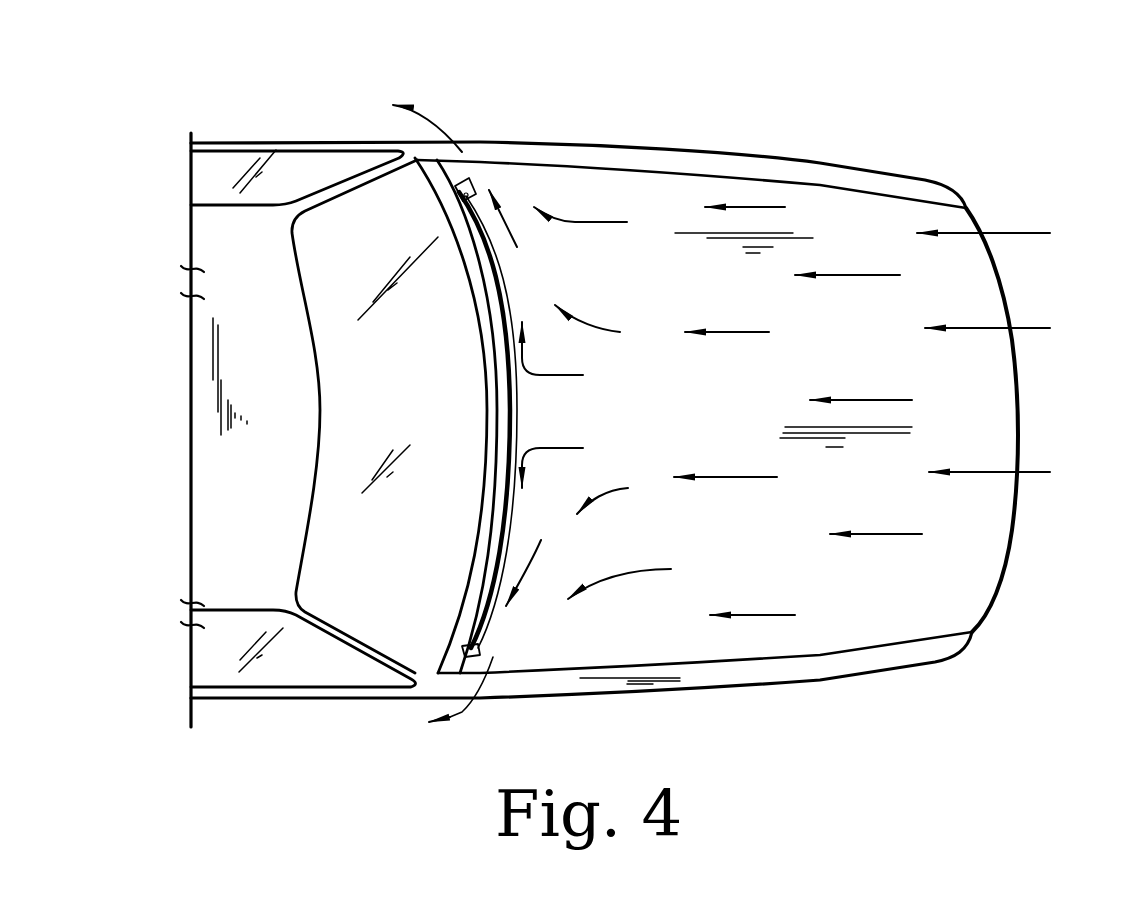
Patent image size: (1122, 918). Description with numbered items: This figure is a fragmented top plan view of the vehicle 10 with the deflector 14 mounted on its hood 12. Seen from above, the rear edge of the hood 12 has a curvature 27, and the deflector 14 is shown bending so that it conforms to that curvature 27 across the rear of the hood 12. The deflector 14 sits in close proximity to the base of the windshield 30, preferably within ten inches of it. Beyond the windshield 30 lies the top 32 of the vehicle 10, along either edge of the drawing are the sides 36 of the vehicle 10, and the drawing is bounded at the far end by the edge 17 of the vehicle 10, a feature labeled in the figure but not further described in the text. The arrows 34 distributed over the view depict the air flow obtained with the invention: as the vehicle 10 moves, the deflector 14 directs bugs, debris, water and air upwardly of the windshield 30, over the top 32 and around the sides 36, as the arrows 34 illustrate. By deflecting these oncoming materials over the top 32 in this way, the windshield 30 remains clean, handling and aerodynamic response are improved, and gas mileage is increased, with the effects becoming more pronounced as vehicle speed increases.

The vehicle 10 is at (610, 128).
The hood 12 is at (776, 186).
The deflector 14 is at (474, 185).
The rear edge of roof 17 is at (999, 276).
The curvature 27 is at (480, 477).
The windshield 30 is at (334, 409).
The top 32 is at (200, 348).
The arrows 34 is at (443, 131).
The sides 36 is at (331, 139).